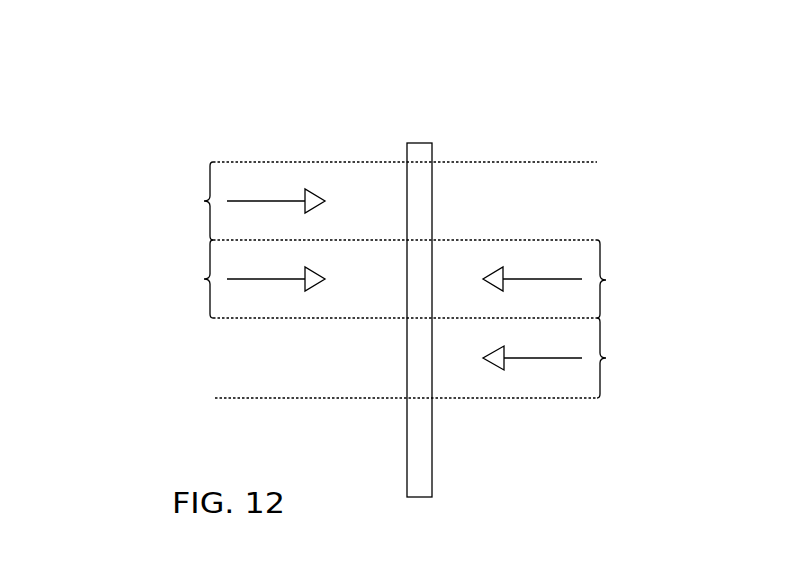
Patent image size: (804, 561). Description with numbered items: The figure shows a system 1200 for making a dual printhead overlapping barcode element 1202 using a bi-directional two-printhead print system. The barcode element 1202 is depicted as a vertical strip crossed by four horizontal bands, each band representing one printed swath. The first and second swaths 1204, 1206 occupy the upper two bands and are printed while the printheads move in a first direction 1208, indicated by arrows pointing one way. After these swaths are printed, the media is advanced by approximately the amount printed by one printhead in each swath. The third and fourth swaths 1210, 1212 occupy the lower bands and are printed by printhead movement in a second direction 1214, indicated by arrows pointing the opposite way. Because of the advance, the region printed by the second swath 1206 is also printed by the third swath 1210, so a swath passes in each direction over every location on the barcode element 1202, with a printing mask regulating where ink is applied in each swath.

The system 1200 is at (137, 343).
The barcode element 1202 is at (420, 143).
The first swath 1204 is at (185, 158).
The second swath 1206 is at (200, 287).
The first direction 1208 is at (267, 200).
The third swath 1210 is at (603, 270).
The fourth swath 1212 is at (603, 367).
The second direction 1214 is at (543, 278).